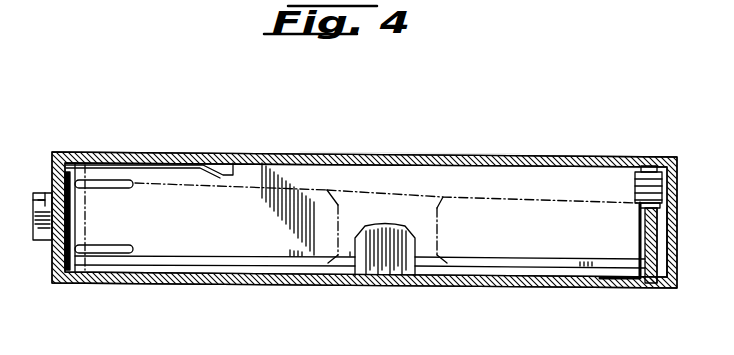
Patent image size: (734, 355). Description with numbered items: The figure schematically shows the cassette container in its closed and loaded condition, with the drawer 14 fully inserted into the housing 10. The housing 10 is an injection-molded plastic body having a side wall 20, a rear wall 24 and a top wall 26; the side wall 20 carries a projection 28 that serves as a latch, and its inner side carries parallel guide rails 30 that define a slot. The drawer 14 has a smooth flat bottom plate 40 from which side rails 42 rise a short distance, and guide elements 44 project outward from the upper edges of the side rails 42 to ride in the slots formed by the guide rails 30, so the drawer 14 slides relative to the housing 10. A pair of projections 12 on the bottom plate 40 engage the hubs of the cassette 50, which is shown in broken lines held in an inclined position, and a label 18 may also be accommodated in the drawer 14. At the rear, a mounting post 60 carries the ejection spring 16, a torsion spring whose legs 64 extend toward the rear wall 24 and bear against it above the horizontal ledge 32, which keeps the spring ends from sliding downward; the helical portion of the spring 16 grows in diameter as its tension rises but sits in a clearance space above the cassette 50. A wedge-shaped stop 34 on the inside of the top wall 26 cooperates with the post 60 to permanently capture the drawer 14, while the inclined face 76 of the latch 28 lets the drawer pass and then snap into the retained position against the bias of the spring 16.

The housing 10 is at (444, 153).
The projections 12 is at (371, 250).
The drawer 14 is at (275, 290).
The ejection spring 16 is at (634, 172).
The label 18 is at (70, 210).
The side wall 20 is at (177, 203).
The rear wall 24 is at (677, 206).
The top wall 26 is at (525, 160).
The projection 28 is at (43, 238).
The guide rails 30 is at (534, 258).
The horizontal ledge 32 is at (660, 214).
The wedge-shaped stop 34 is at (227, 163).
The bottom plate 40 is at (467, 287).
The side rails 42 is at (612, 270).
The guide elements 44 is at (476, 262).
The cassette 50 is at (314, 192).
The mounting post 60 is at (650, 167).
The leg 64 is at (663, 177).
The inclined face 76 is at (40, 202).